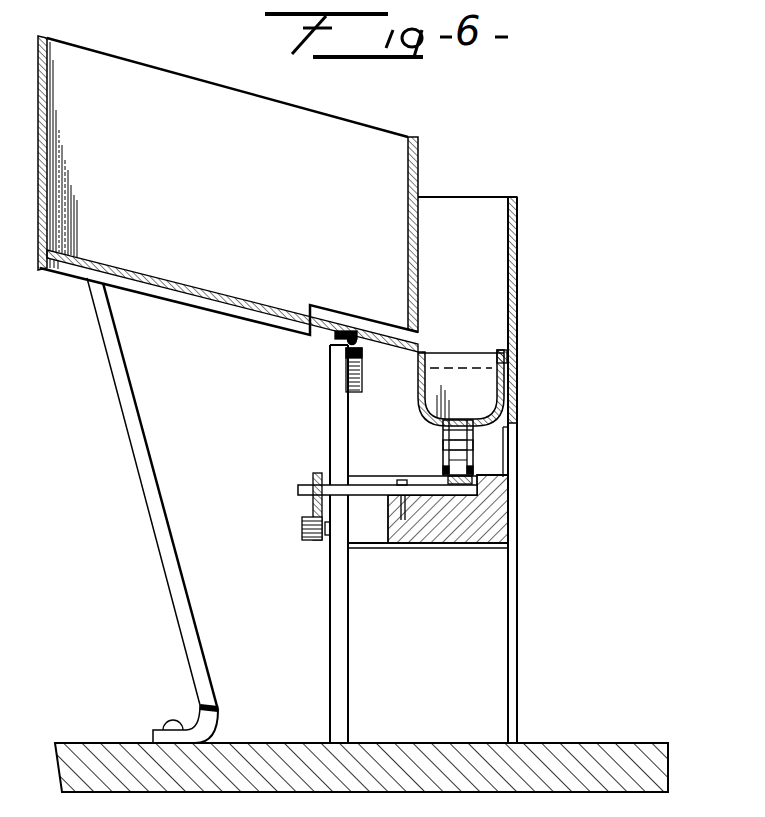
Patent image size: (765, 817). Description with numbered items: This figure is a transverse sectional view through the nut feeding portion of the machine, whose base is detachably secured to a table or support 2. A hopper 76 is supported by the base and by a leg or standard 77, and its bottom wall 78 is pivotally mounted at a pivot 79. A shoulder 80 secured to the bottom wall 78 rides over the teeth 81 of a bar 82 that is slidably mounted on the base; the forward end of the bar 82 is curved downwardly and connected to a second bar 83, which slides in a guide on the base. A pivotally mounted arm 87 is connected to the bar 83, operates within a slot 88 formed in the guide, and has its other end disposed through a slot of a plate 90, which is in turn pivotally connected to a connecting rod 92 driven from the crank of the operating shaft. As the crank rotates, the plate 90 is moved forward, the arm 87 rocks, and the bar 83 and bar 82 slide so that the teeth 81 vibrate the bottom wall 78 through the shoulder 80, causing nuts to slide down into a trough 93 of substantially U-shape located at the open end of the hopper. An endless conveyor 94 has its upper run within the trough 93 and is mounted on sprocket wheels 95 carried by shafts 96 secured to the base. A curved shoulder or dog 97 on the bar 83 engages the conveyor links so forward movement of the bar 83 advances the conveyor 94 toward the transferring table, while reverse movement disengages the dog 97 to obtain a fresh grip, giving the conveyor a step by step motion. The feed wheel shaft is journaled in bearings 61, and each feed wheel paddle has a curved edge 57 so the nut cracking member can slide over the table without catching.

The table or support 2 is at (580, 741).
The curved edge of paddle 57 is at (475, 526).
The bearings 61 is at (510, 468).
The hopper 76 is at (207, 88).
The leg or standard 77 is at (135, 454).
The bottom wall of hopper 78 is at (140, 271).
The pivotal mounting 79 is at (237, 308).
The shoulder 80 is at (362, 348).
The teeth 81 is at (344, 348).
The bar 82 is at (345, 368).
The bar 83 is at (512, 492).
The pivotally mounted arm 87 is at (303, 486).
The slot 88 is at (436, 485).
The plate 90 is at (312, 508).
The connecting rod 92 is at (309, 541).
The trough 93 is at (506, 378).
The endless conveyor 94 is at (470, 432).
The sprocket wheels 95 is at (440, 440).
The shafts 96 is at (472, 447).
The shoulder or dog 97 is at (480, 460).